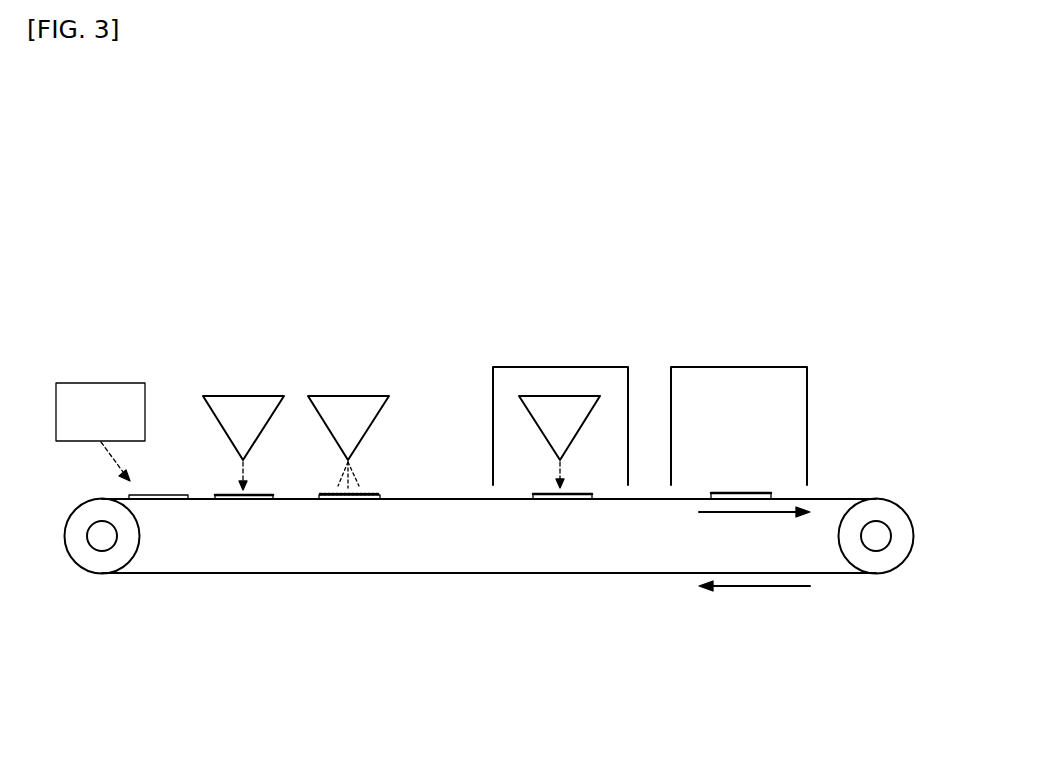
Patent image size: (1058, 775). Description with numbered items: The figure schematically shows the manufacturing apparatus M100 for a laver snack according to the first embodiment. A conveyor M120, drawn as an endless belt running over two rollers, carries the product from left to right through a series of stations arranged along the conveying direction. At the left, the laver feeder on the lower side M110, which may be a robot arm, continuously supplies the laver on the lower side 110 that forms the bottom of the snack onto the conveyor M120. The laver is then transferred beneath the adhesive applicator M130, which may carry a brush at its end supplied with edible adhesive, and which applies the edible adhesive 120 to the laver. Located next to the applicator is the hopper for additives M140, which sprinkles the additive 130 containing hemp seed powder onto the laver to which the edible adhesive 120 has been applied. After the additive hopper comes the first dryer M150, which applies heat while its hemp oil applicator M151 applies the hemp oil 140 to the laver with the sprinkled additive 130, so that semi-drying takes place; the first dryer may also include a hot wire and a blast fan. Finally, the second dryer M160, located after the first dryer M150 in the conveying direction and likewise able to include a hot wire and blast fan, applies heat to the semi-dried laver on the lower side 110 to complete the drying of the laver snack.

The manufacturing apparatus M100 is at (458, 246).
The laver feeder on the lower side M110 is at (100, 403).
The conveyor M120 is at (230, 573).
The adhesive applicator M130 is at (248, 403).
The hopper for additives M140 is at (355, 403).
The first dryer M150 is at (593, 367).
The hemp oil applicator M151 is at (537, 407).
The second dryer M160 is at (740, 367).
The laver on the lower side 110 is at (163, 495).
The edible adhesive 120 is at (277, 494).
The additive 130 is at (380, 490).
The hemp oil 140 is at (592, 495).